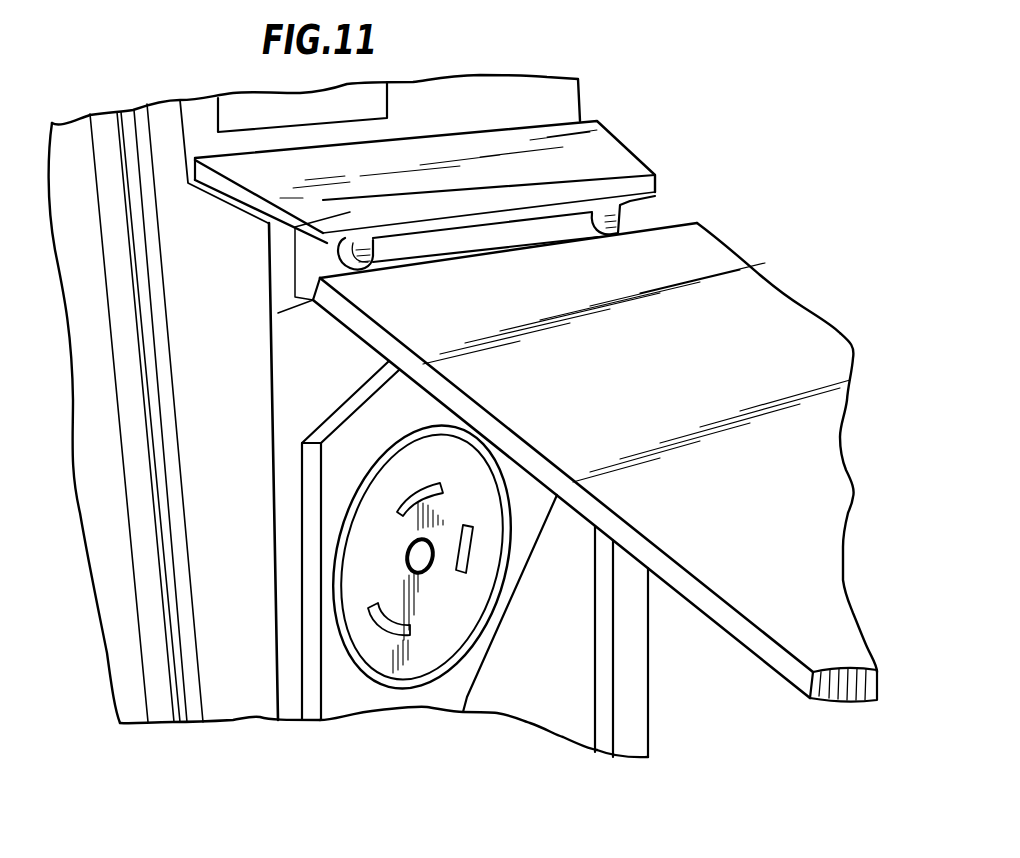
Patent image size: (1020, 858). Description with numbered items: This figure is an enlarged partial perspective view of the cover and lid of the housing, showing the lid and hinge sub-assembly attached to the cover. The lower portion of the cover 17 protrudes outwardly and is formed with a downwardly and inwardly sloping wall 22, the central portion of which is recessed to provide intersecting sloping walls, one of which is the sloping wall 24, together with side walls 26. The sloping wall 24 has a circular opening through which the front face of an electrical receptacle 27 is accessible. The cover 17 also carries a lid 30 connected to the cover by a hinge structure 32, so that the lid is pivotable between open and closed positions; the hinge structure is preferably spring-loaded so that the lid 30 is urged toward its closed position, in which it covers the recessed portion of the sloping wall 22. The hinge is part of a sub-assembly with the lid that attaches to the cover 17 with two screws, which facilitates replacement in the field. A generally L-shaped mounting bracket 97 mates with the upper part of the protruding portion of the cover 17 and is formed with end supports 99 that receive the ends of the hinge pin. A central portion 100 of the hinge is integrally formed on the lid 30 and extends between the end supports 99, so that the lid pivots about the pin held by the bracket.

The cover 17 is at (583, 97).
The sloping wall 22 is at (312, 357).
The sloping wall 24 is at (497, 600).
The side wall 26 is at (583, 663).
The electrical receptacle 27 is at (360, 562).
The lid 30 is at (752, 260).
The hinge structure 32 is at (547, 200).
The mounting bracket 97 is at (616, 133).
The end support 99 is at (345, 238).
The central portion 100 is at (528, 234).